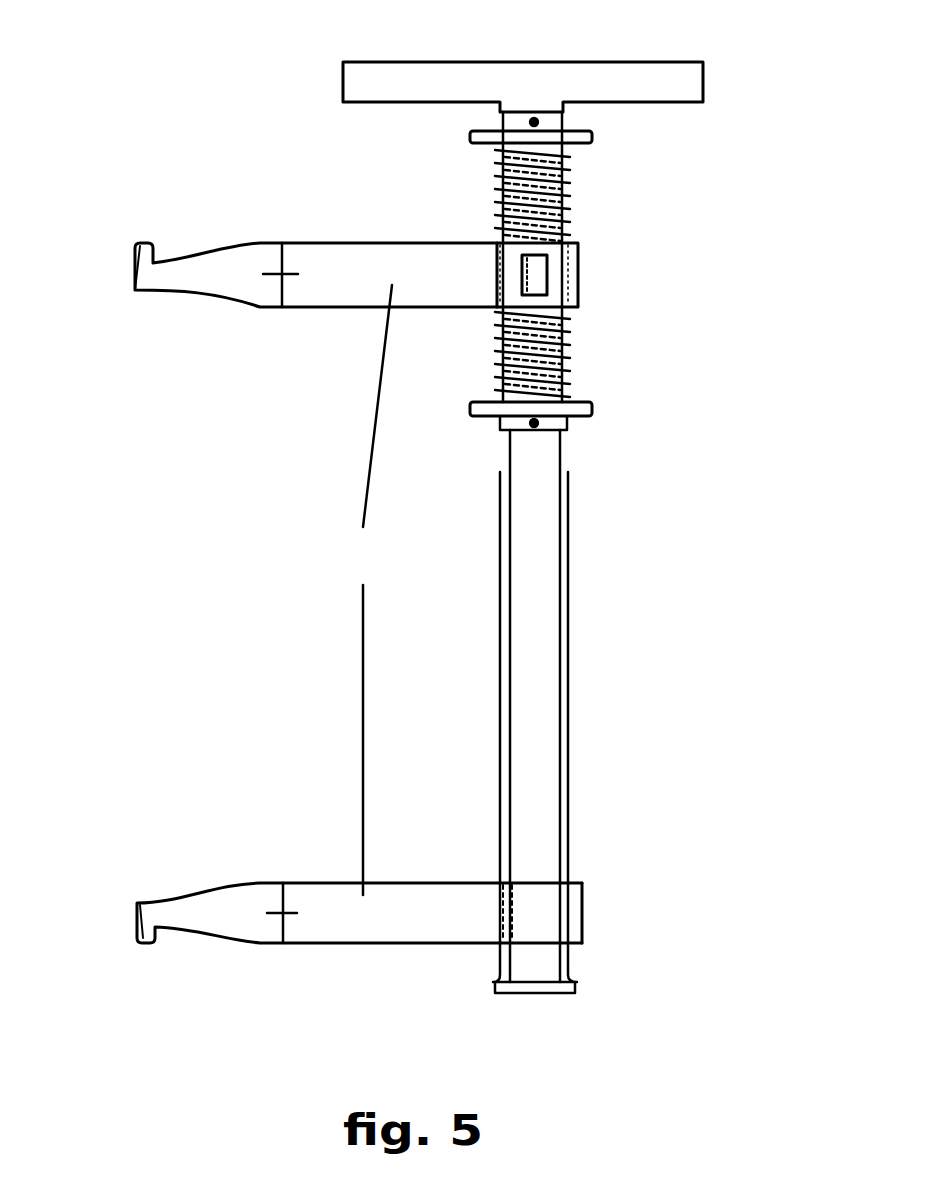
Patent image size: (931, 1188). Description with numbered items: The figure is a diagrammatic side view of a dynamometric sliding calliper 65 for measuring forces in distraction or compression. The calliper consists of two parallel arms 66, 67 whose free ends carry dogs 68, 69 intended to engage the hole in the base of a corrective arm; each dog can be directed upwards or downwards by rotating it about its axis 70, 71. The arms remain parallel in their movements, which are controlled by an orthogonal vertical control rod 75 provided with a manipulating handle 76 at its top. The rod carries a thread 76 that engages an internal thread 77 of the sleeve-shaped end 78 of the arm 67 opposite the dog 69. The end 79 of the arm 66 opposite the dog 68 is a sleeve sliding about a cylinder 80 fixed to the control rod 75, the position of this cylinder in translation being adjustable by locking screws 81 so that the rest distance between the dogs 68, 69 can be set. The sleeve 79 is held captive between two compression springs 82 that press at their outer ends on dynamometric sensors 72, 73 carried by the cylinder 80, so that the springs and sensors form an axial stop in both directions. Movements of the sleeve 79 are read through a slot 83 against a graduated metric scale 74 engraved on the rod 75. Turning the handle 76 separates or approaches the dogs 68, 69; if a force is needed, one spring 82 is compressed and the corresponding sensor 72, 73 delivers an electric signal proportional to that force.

The sliding calliper 65 is at (532, 640).
The arm 66 is at (410, 272).
The arm 67 is at (387, 915).
The dog 68 is at (144, 252).
The dog 69 is at (144, 937).
The axis 70 is at (280, 293).
The axis 71 is at (283, 893).
The dynamometric sensor 72 is at (585, 136).
The dynamometric sensor 73 is at (577, 409).
The graduated metric scale 74 is at (527, 297).
The control rod 75 is at (533, 578).
The manipulating handle 76 is at (390, 88).
The internal thread 77 is at (568, 906).
The sleeve-shaped end 78 is at (578, 930).
The sleeve end 79 is at (572, 273).
The cylinder 80 is at (553, 427).
The locking screw 81 is at (533, 122).
The compression spring 82 is at (572, 178).
The slot 83 is at (543, 262).